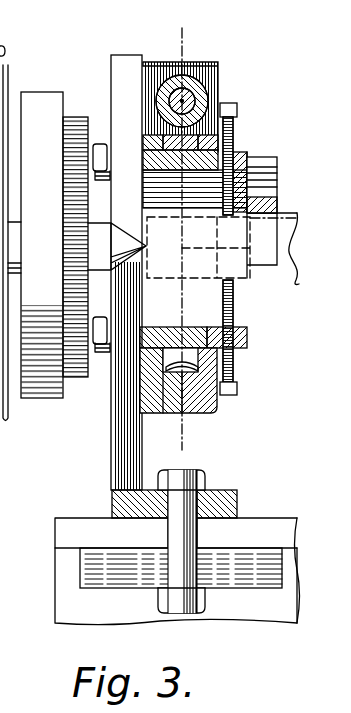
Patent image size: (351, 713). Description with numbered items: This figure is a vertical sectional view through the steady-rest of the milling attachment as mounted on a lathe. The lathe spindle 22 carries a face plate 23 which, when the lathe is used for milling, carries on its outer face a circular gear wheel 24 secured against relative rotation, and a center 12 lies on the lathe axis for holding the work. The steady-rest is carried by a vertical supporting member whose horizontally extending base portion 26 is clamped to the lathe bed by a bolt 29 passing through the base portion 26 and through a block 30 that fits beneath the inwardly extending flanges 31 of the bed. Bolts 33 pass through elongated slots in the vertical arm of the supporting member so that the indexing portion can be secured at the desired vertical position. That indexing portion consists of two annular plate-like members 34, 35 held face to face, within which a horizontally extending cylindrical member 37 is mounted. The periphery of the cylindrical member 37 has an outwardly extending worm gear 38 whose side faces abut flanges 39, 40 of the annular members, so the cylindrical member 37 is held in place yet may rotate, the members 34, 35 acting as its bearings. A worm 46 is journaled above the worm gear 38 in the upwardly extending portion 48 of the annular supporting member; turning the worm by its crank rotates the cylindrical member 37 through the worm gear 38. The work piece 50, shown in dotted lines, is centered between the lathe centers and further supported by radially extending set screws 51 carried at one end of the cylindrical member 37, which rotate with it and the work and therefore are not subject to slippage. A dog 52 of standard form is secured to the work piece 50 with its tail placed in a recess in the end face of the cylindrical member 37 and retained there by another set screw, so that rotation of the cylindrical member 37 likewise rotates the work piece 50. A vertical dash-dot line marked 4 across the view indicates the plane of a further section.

The section line 4- 4 is at (207, 25).
The center 12 is at (88, 248).
The lathe spindle 22 is at (146, 248).
The face plate 23 is at (47, 394).
The circular gear wheel 24 is at (72, 378).
The base portion 26 is at (238, 507).
The bolt 29 is at (205, 481).
The block 30 is at (226, 586).
The inwardly extending flanges 31 is at (176, 533).
The bolts 33 is at (101, 143).
The annular plate-like member 34 is at (160, 414).
The annular plate-like member 35 is at (197, 414).
The cylindrical member 37 is at (248, 338).
The worm gear 38 is at (220, 398).
The flange 39 is at (163, 345).
The flange 40 is at (207, 345).
The worm 46 is at (209, 93).
The upwardly extending portion 48 is at (213, 65).
The work piece 50 is at (286, 272).
The set screws 51 is at (237, 121).
The dog 52 is at (279, 193).